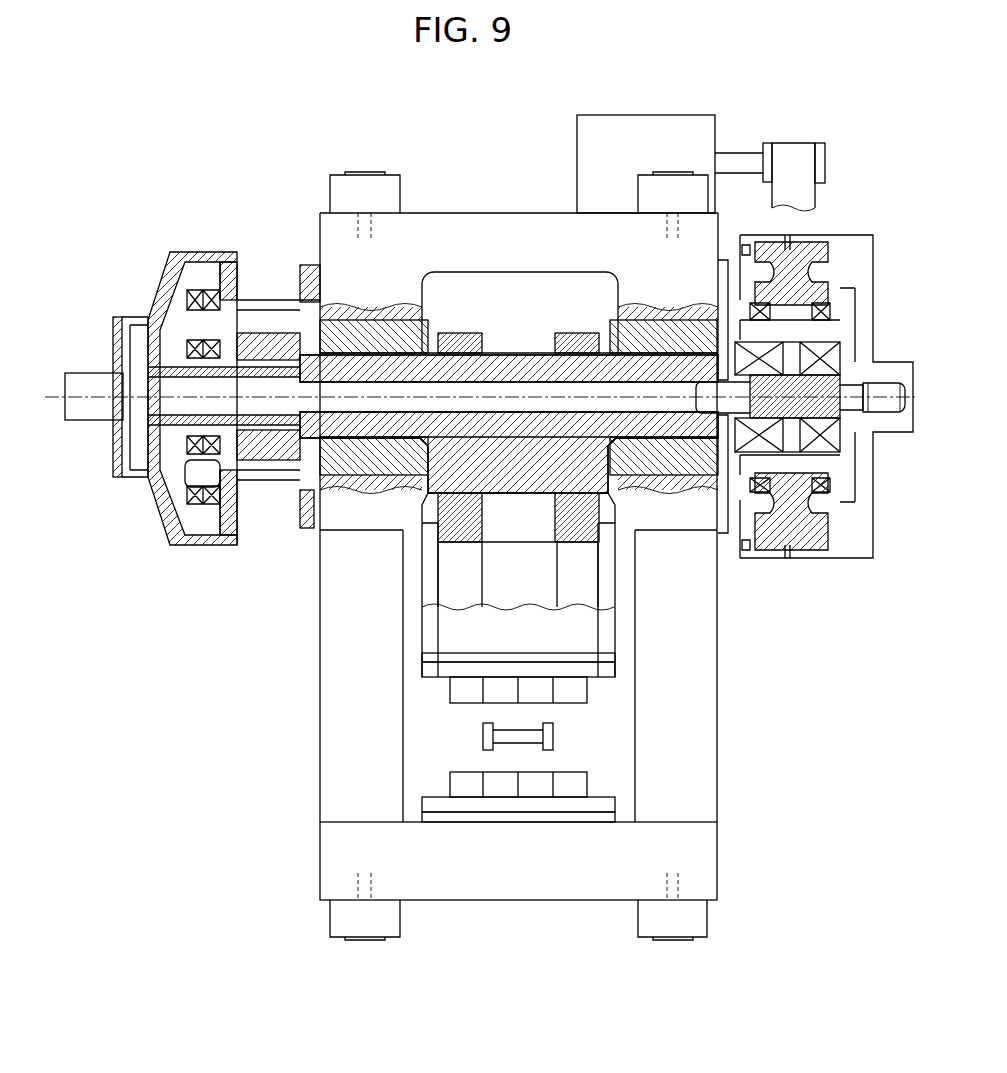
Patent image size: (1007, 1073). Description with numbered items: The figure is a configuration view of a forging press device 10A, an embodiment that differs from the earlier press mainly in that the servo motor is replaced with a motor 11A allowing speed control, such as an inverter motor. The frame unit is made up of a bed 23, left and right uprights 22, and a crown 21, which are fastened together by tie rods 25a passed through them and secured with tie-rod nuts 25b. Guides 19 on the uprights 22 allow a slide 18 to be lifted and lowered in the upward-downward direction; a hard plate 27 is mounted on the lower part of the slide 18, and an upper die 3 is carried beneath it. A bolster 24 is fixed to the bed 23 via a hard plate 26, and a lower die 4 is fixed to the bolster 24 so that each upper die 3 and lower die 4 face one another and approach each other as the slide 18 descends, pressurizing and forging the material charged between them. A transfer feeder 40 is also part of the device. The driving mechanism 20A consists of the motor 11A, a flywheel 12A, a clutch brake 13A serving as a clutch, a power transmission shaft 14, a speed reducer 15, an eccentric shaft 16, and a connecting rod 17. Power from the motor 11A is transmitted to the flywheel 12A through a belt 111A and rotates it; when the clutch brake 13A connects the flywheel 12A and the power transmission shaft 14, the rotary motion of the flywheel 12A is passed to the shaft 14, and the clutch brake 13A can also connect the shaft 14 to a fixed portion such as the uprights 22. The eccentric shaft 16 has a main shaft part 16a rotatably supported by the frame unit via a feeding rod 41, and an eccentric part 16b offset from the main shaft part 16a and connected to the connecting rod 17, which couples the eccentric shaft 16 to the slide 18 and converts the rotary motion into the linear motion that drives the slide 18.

The forging press device 10A is at (390, 125).
The motor 11A is at (716, 133).
The belt 111A is at (797, 150).
The driving mechanism 20A is at (855, 152).
The flywheel 12A is at (843, 252).
The clutch brake 13A is at (835, 355).
The power transmission shaft 14 is at (637, 403).
The speed reducer 15 is at (178, 487).
The eccentric shaft 16 is at (430, 488).
The main shaft part 16a is at (300, 495).
The eccentric part 16b is at (524, 492).
The connecting rod 17 is at (473, 568).
The slide 18 is at (430, 655).
The guide 19 is at (417, 606).
The crown 21 is at (530, 230).
The upright 22 is at (330, 753).
The bed 23 is at (705, 858).
The bolster 24 is at (425, 800).
The tie rod 25a is at (365, 230).
The tie-rod nut 25b is at (392, 200).
The hard plate 26 is at (622, 818).
The hard plate 27 is at (430, 666).
The upper die 3 is at (493, 690).
The lower die 4 is at (497, 781).
The transfer feeder 40 is at (480, 738).
The feeding rod 41 is at (415, 337).